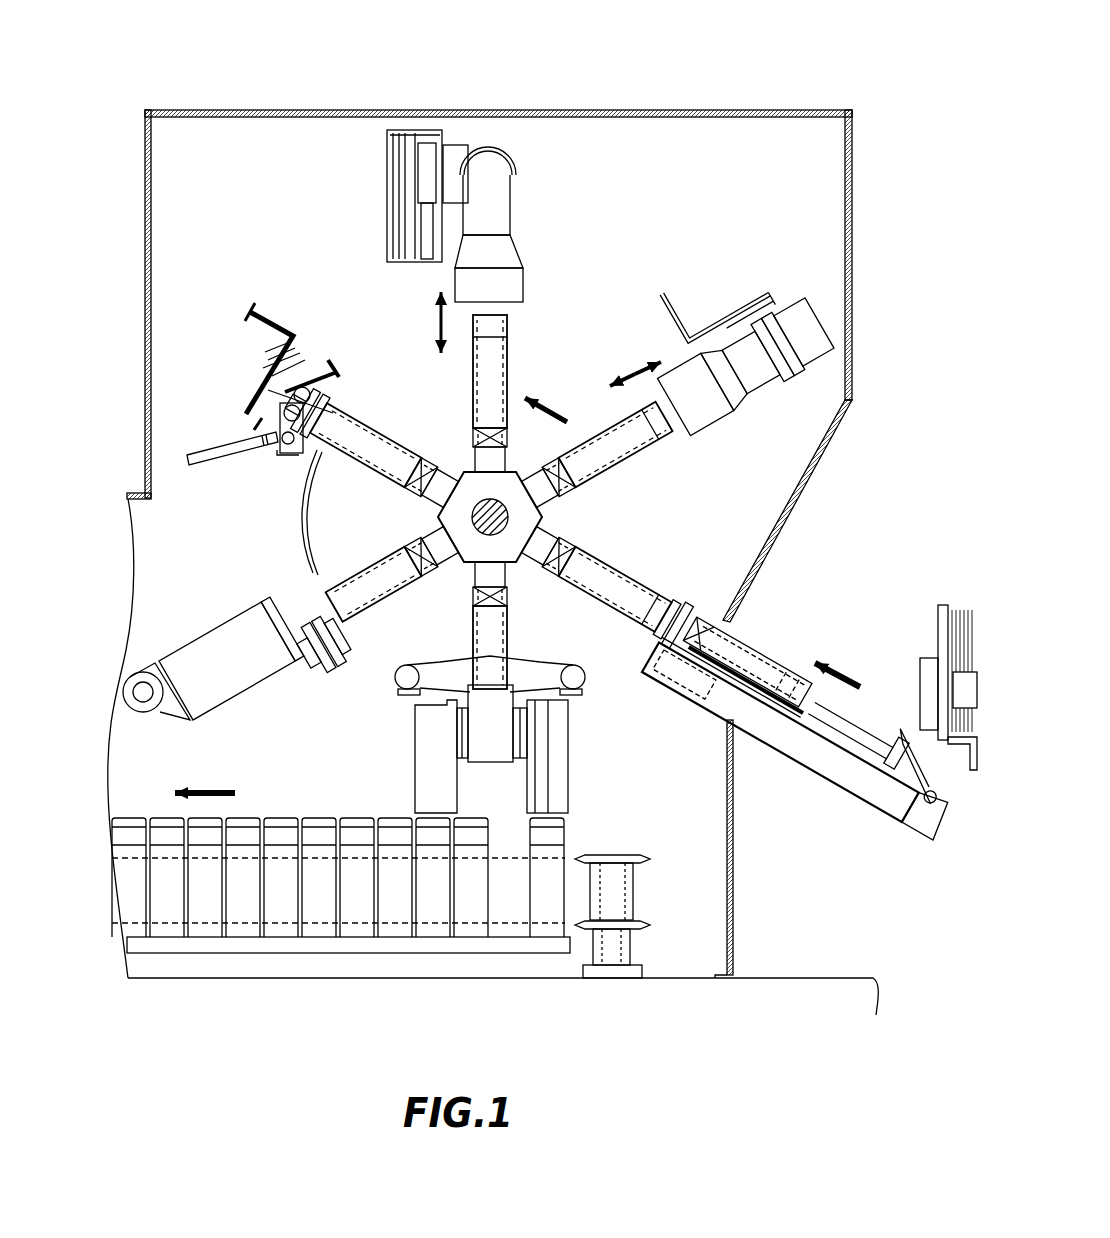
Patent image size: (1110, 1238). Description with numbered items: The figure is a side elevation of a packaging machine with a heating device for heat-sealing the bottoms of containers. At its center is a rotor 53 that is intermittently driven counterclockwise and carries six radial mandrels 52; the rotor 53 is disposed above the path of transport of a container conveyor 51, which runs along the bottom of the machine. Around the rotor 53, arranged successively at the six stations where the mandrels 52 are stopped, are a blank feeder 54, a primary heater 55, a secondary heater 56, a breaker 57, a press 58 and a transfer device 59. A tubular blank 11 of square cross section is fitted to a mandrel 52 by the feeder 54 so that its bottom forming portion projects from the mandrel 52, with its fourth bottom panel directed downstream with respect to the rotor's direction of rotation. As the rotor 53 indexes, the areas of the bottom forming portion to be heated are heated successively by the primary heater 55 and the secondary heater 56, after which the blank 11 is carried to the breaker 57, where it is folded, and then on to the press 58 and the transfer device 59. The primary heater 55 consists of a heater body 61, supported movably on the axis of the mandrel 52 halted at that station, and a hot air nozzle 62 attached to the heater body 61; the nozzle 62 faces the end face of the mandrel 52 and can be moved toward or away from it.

The tubular blank 11 is at (633, 595).
The container conveyor 51 is at (670, 903).
The mandrel 52 is at (543, 495).
The rotor 53 is at (665, 483).
The blank feeder 54 is at (830, 612).
The primary heater 55 is at (737, 298).
The secondary heater 56 is at (375, 187).
The breaker 57 is at (220, 351).
The press 58 is at (252, 598).
The transfer device 59 is at (600, 776).
The heater body 61 is at (457, 155).
The hot air nozzle 62 is at (513, 285).